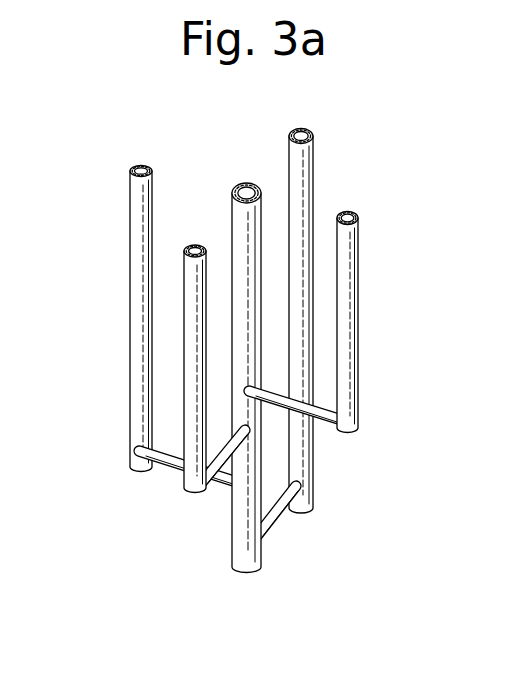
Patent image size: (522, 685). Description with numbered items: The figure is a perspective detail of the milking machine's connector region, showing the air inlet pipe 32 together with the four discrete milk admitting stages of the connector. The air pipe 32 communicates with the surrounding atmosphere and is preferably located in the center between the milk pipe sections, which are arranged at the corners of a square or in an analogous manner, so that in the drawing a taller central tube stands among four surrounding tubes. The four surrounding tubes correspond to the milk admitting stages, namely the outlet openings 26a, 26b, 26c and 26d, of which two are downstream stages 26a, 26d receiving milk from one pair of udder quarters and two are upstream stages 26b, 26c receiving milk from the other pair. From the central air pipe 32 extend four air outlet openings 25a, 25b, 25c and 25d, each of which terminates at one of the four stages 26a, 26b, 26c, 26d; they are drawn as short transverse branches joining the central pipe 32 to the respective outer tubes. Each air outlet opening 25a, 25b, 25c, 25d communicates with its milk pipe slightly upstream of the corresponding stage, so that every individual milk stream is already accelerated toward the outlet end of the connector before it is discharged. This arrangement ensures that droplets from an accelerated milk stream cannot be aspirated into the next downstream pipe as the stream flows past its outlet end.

The air inlet pipe 32 is at (231, 222).
The outlet opening 26a is at (308, 506).
The outlet opening 26b is at (342, 425).
The outlet opening 26c is at (193, 492).
The outlet opening 26d is at (139, 470).
The air outlet opening 25a is at (283, 509).
The air outlet opening 25b is at (327, 410).
The air outlet opening 25c is at (227, 450).
The air outlet opening 25d is at (170, 468).